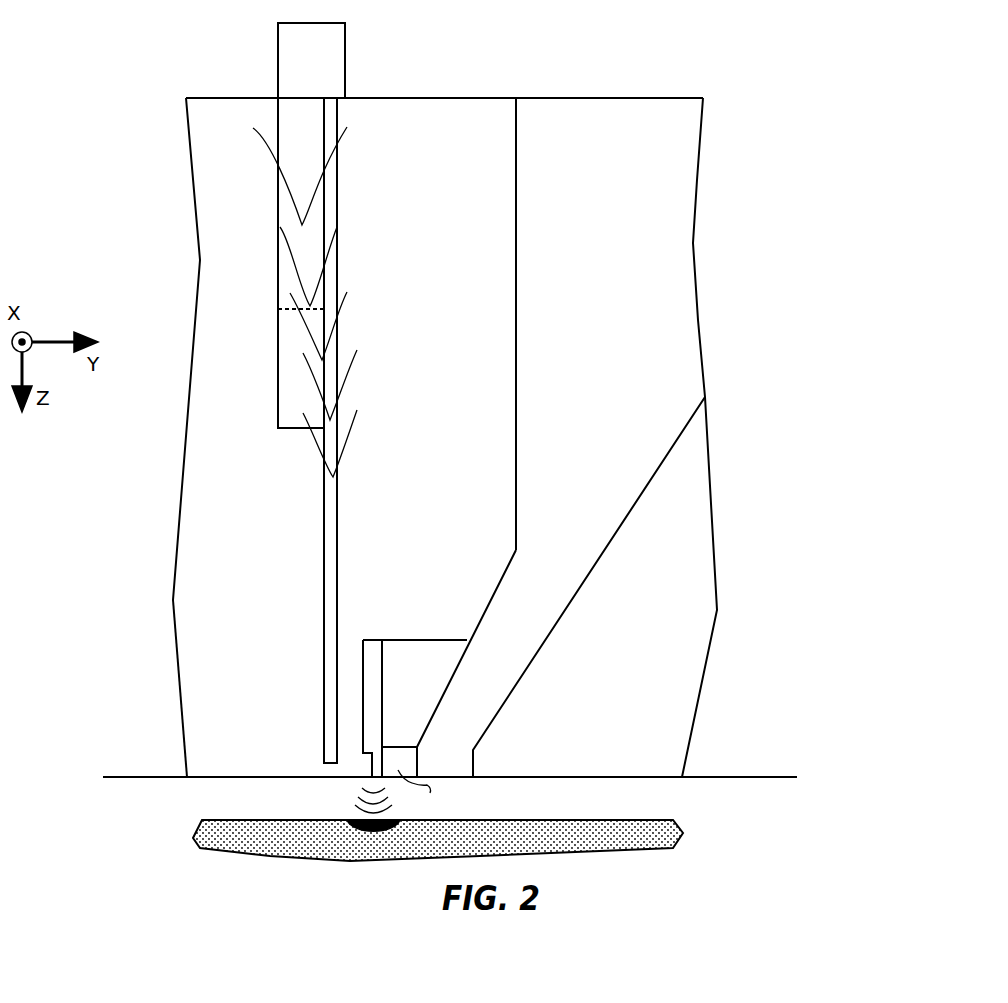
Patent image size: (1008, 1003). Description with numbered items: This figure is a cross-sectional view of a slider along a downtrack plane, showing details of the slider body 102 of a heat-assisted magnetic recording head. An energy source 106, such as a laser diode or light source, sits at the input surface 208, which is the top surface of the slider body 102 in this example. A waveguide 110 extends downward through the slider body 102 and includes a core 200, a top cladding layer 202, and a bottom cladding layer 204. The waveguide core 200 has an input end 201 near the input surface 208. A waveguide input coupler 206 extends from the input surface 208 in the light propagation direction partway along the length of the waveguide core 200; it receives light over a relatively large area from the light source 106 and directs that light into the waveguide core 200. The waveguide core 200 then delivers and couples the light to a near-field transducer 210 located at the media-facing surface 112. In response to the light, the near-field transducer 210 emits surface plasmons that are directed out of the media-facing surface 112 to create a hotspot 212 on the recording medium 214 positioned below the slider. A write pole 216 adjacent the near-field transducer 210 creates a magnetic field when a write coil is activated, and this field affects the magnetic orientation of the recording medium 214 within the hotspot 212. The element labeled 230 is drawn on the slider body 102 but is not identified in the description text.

The slider body 102 is at (126, 46).
The energy source 106 is at (345, 35).
The waveguide 110 is at (173, 216).
The media-facing surface 112 is at (786, 779).
The waveguide core 200 is at (333, 277).
The input end 201 is at (333, 112).
The top cladding layer 202 is at (443, 123).
The bottom cladding layer 204 is at (213, 125).
The waveguide input coupler 206 is at (285, 128).
The input surface 208 is at (498, 98).
The near-field transducer 210 is at (372, 640).
The hotspot 212 is at (373, 836).
The recording medium 214 is at (630, 820).
The write pole 216 is at (480, 734).
The housing wall 230 is at (197, 573).